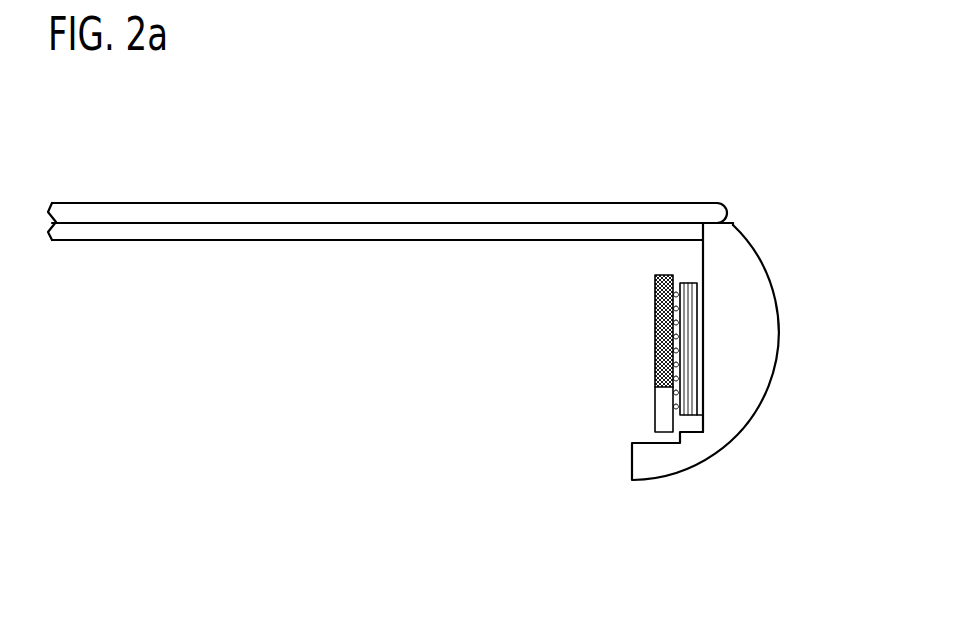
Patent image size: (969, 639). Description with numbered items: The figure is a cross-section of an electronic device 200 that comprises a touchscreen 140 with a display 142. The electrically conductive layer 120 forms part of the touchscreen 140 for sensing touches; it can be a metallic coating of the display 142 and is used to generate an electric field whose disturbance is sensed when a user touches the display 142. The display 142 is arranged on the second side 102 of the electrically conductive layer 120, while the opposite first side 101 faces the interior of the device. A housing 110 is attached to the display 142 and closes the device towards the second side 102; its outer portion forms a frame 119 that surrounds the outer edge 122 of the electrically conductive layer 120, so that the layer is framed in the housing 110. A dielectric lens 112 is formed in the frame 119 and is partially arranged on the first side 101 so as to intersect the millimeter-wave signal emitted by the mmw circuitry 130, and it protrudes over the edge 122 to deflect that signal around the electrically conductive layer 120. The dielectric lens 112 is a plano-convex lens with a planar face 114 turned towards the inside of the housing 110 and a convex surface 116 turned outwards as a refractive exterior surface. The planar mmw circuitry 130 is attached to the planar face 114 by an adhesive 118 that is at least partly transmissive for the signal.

The electronic device 200 is at (156, 142).
The second side 102 is at (403, 149).
The touchscreen 140 is at (544, 191).
The display 142 is at (725, 211).
The electrically conductive layer 120 is at (140, 233).
The first side 101 is at (296, 300).
The housing 110 is at (662, 505).
The planar face 114 is at (703, 260).
The outer edge 122 is at (712, 237).
The convex surface 116 is at (772, 272).
The dielectric lens 112 is at (773, 328).
The frame 119 is at (759, 451).
The adhesive 118 is at (699, 378).
The mmw circuitry 130 is at (655, 342).